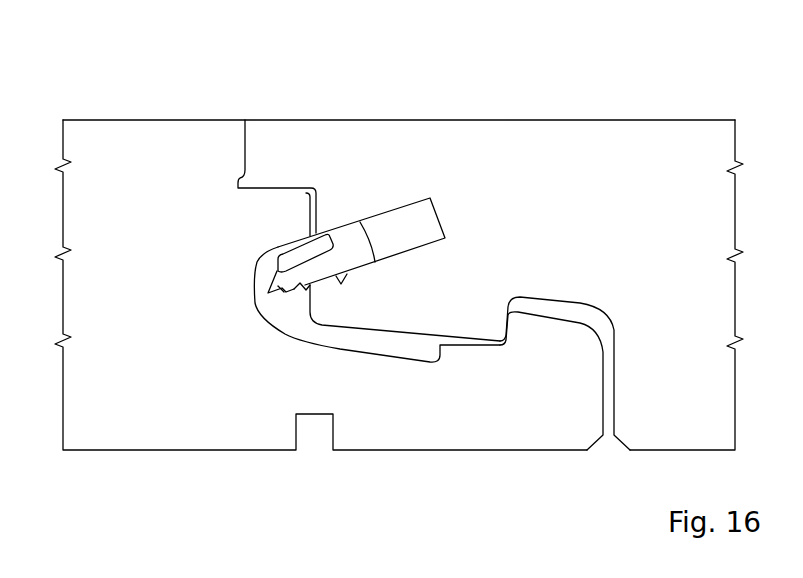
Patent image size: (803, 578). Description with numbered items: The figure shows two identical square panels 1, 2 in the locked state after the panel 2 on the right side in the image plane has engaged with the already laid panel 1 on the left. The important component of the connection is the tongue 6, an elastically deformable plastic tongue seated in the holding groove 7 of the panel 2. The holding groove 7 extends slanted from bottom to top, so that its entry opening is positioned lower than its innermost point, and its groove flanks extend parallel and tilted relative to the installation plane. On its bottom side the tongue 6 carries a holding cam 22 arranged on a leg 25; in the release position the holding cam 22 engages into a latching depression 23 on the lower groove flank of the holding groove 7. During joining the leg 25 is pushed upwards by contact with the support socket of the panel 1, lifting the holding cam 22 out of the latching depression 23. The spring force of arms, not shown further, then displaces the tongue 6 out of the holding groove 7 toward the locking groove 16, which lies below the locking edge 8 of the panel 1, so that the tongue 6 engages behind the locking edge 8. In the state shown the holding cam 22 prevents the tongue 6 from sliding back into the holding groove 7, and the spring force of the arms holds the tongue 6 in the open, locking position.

The panel 1 is at (110, 438).
The panel 2 is at (678, 141).
The tongue 6 is at (351, 237).
The holding groove 7 is at (427, 222).
The locking edge 8 is at (308, 237).
The locking groove 16 is at (255, 303).
The holding cam 22 is at (300, 287).
The latching depression 23 is at (348, 278).
The leg 25 is at (283, 285).